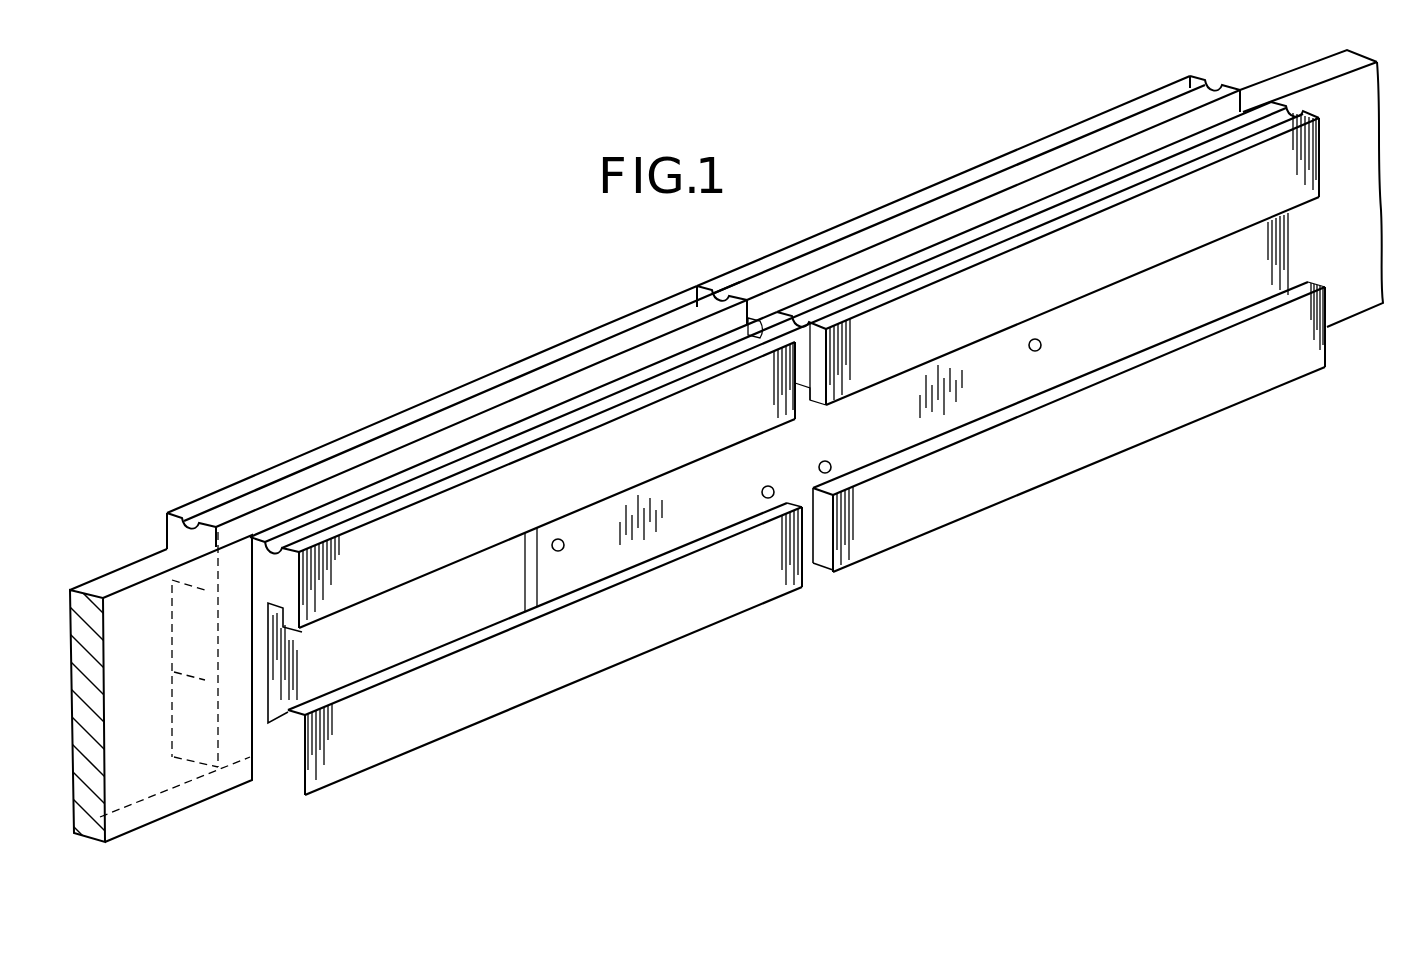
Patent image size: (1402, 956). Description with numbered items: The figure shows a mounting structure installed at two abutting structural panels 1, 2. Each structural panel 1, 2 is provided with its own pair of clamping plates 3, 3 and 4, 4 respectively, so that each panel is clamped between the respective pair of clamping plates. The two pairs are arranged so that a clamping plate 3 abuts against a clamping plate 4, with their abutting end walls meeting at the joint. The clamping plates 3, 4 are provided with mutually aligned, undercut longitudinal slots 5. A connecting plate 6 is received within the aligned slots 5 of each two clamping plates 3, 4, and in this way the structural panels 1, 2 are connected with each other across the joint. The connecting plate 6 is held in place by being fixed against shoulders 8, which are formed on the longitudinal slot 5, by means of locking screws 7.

The structural panel 1 is at (168, 776).
The structural panel 2 is at (1352, 270).
The clamping plate 3 is at (386, 423).
The clamping plate 4 is at (1003, 160).
The longitudinal slot 5 is at (402, 646).
The connecting plate 6 is at (690, 513).
The locking screw 7 is at (560, 551).
The shoulder 8 is at (293, 722).